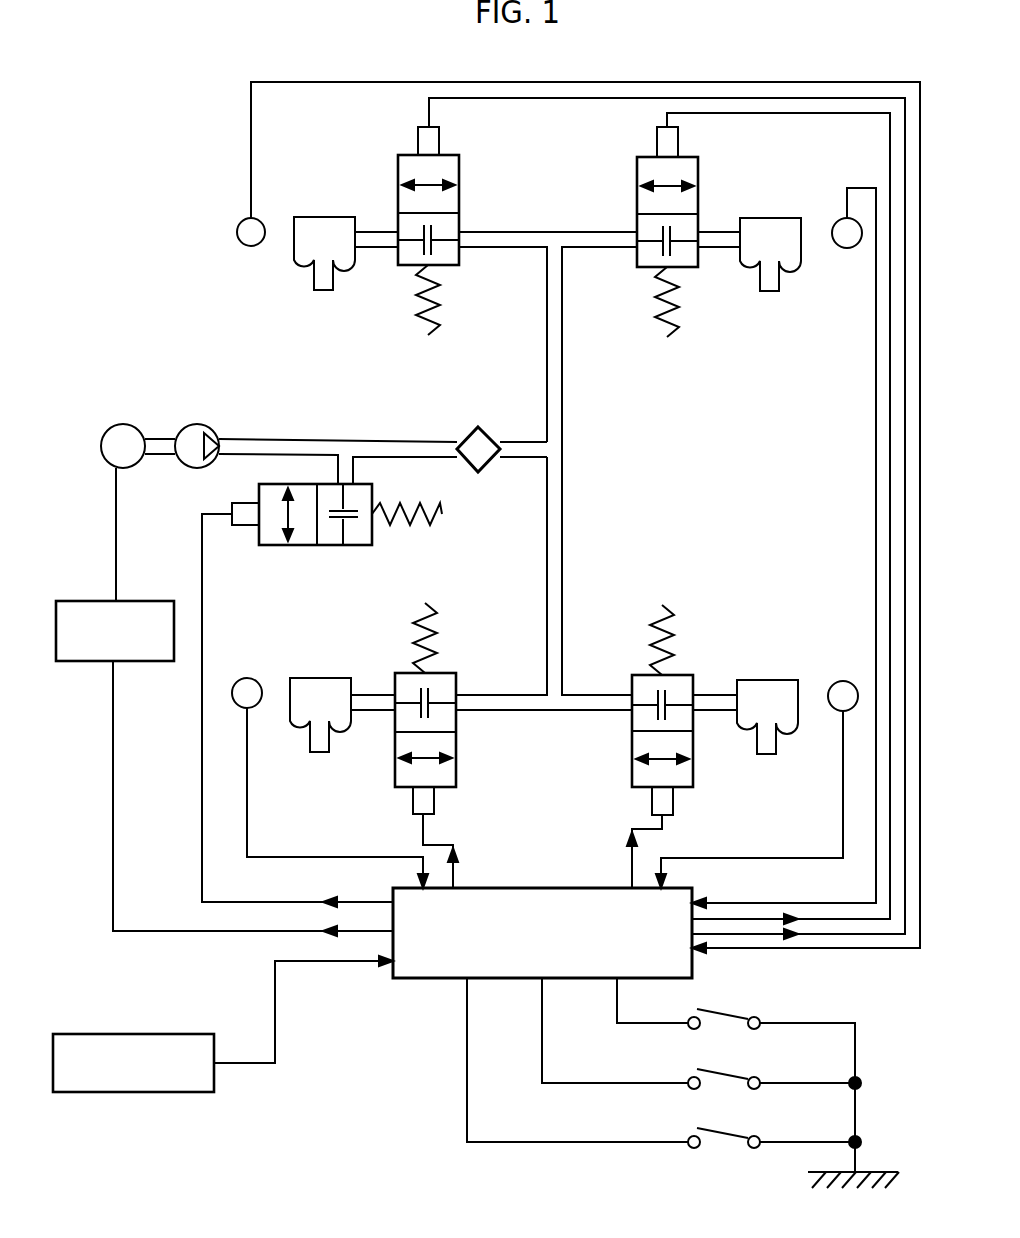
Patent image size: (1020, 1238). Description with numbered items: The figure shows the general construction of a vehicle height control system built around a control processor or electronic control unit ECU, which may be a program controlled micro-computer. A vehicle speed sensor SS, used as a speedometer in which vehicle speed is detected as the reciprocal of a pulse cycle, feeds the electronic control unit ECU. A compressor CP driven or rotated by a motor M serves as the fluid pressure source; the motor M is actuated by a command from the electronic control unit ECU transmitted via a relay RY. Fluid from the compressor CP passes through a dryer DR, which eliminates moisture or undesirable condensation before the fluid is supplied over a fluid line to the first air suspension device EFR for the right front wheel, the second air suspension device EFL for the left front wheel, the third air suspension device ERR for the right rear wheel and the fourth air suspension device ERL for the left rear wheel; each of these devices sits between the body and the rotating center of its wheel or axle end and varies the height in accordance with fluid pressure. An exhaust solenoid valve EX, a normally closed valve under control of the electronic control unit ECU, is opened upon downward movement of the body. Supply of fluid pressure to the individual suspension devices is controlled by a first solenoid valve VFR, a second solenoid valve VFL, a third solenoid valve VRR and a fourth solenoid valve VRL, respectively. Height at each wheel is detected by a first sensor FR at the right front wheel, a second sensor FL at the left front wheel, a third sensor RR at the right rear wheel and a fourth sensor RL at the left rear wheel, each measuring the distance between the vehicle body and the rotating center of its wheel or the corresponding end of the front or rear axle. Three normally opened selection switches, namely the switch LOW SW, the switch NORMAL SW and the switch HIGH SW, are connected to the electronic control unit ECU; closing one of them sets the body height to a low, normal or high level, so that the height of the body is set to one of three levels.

The second sensor FL is at (251, 246).
The first sensor FR is at (847, 249).
The fourth sensor RL is at (247, 679).
The third sensor RR is at (843, 681).
The second air suspension device EFL is at (324, 268).
The first air suspension device EFR is at (770, 270).
The fourth air suspension device ERL is at (320, 730).
The third air suspension device ERR is at (767, 732).
The second solenoid valve VFL is at (448, 231).
The first solenoid valve VFR is at (645, 232).
The fourth solenoid valve VRL is at (446, 708).
The third solenoid valve VRR is at (636, 710).
The motor M is at (123, 431).
The compressor CP is at (197, 431).
The dryer DR is at (478, 435).
The exhaust solenoid valve EX is at (337, 527).
The relay RY is at (115, 616).
The vehicle speed sensor SS is at (133, 1047).
The electronic control unit ECU is at (542, 933).
The selection switch HIGH SW is at (766, 1011).
The selection switch NORMAL SW is at (774, 1070).
The selection switch LOW SW is at (774, 1129).